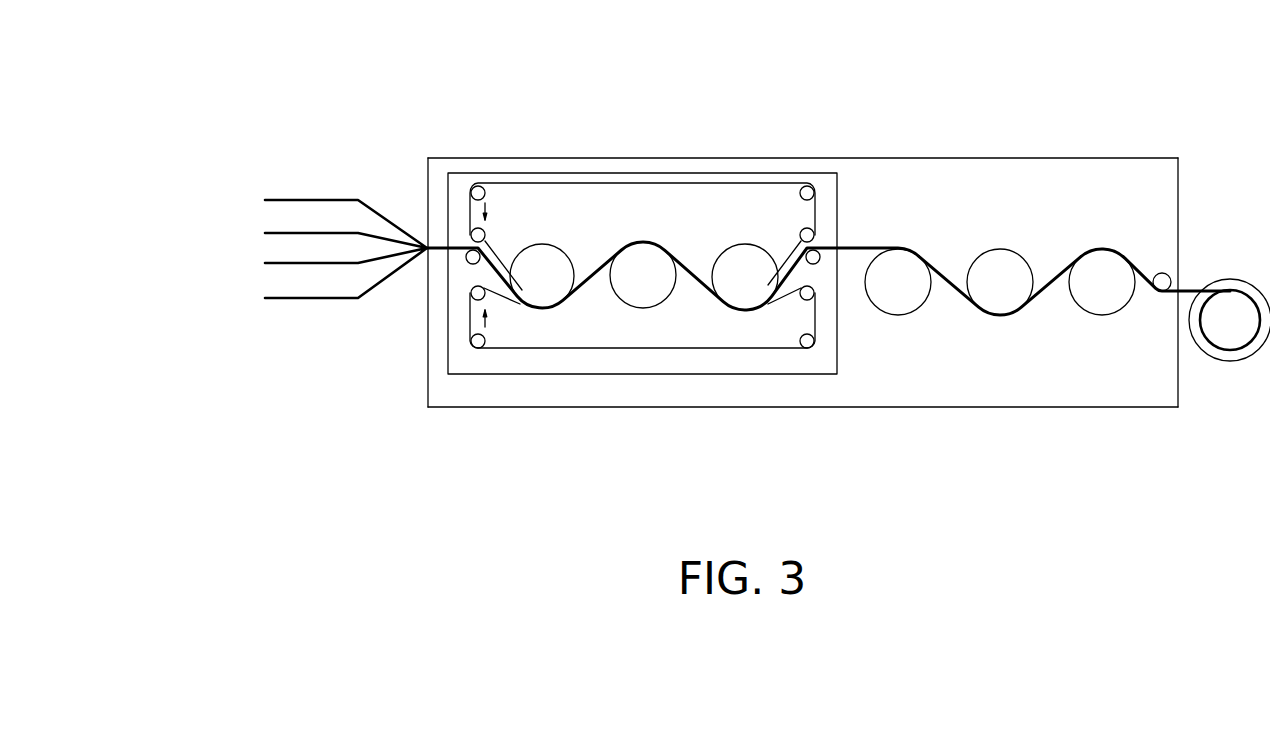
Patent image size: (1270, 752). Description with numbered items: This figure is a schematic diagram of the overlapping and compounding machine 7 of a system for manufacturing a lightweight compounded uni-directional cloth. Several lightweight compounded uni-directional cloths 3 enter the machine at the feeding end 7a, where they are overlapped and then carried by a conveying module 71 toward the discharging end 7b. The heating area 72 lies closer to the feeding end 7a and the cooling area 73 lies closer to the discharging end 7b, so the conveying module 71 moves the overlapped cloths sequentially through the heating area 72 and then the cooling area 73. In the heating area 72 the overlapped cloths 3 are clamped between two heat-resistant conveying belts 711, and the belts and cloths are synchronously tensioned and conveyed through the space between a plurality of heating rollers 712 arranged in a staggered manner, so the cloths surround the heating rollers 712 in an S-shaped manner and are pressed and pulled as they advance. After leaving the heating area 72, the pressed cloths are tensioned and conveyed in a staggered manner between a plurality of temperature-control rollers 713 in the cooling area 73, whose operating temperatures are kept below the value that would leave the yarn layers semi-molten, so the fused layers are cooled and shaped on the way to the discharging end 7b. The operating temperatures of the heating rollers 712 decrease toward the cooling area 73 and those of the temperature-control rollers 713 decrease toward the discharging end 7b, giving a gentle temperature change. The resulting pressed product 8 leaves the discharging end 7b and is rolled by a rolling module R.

The lightweight compounded uni-directional cloth 3 is at (312, 196).
The overlapping and compounding machine 7 is at (1053, 443).
The feeding end 7a is at (410, 183).
The discharging end 7b is at (1163, 334).
The conveying module 71 is at (855, 228).
The heat-resistant conveying belt 711 is at (668, 182).
The heating roller 712 is at (540, 262).
The temperature-control roller 713 is at (995, 260).
The heating area 72 is at (766, 199).
The cooling area 73 is at (1018, 201).
The pressed product 8 is at (1195, 285).
The rolling module R is at (1237, 342).